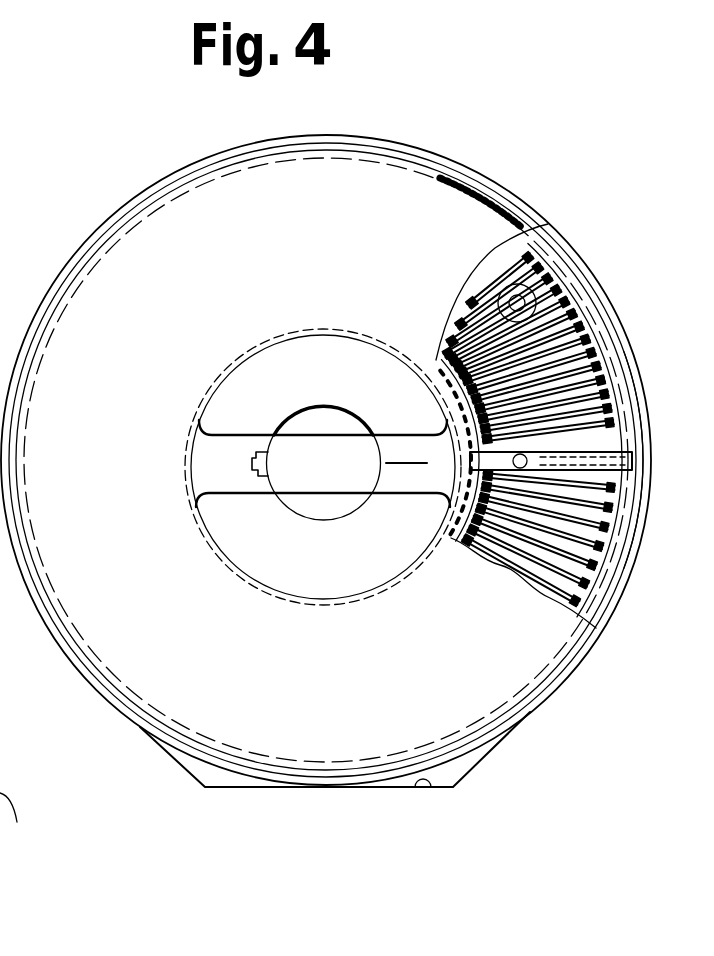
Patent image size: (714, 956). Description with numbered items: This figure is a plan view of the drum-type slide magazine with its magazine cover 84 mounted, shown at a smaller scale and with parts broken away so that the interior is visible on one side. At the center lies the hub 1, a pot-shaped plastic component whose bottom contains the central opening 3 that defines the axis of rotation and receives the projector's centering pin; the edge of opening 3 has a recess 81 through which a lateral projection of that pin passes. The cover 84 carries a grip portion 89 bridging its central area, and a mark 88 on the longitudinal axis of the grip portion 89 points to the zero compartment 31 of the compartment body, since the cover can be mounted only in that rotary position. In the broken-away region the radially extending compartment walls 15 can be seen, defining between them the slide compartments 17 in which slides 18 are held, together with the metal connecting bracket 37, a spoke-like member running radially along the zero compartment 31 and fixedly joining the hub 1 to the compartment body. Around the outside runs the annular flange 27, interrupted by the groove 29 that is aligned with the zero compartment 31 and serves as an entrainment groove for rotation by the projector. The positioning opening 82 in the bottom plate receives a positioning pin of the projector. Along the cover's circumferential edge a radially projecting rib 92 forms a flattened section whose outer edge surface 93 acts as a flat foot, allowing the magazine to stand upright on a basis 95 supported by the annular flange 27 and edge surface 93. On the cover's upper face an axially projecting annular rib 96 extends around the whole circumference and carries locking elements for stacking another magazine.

The hub 1 is at (440, 363).
The opening 3 is at (309, 412).
The compartment walls 15 is at (588, 577).
The slide compartments 17 is at (598, 548).
The slide 18 is at (577, 297).
The annular flange 27 is at (648, 503).
The groove 29 is at (657, 437).
The zero compartment 31 is at (632, 462).
The connecting bracket 37 is at (580, 318).
The recess 81 is at (252, 462).
The positioning opening 82 is at (560, 228).
The magazine cover 84 is at (510, 650).
The mark 88 is at (403, 463).
The grip portion 89 is at (247, 494).
The rib 92 is at (207, 786).
The edge surface 93 is at (414, 790).
The basis 95 is at (20, 826).
The annular rib 96 is at (90, 243).